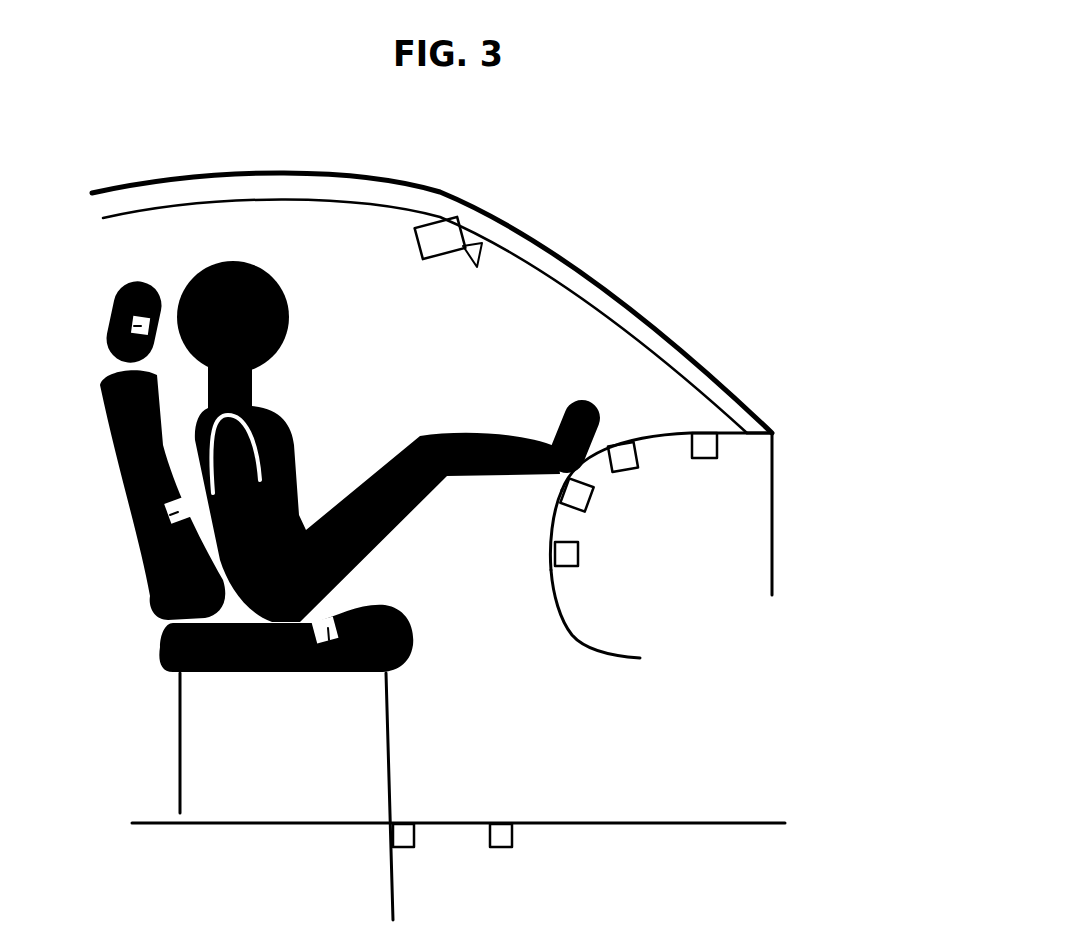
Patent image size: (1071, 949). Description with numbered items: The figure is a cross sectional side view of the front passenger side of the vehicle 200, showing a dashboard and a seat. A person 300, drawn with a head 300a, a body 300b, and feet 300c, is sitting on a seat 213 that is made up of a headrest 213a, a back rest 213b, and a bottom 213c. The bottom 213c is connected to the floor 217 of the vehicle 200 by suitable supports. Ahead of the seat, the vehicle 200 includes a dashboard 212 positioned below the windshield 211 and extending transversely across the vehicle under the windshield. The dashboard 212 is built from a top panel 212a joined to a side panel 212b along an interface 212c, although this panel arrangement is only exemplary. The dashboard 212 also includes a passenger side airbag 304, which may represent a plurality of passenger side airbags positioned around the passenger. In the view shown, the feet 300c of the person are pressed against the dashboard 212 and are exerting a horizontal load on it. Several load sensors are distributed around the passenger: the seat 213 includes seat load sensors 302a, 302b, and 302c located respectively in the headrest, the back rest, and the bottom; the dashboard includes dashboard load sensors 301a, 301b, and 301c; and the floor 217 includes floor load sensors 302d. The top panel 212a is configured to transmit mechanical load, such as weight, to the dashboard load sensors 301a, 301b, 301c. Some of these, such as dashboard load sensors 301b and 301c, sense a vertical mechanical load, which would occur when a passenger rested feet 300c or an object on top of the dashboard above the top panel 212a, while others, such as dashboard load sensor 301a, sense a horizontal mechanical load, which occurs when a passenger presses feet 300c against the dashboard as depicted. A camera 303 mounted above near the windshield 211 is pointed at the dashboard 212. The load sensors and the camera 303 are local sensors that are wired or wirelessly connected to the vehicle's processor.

The vehicle 200 is at (892, 157).
The windshield 211 is at (590, 297).
The dashboard 212 is at (662, 484).
The top panel 212a is at (658, 432).
The side panel 212b is at (552, 588).
The interface 212c is at (552, 517).
The seat 213 is at (226, 583).
The headrest 213a is at (118, 308).
The back rest 213b is at (147, 587).
The bottom 213c is at (290, 673).
The floor 217 is at (660, 823).
The person 300 is at (359, 423).
The head 300a is at (283, 297).
The body 300b is at (287, 450).
The feet 300c is at (585, 398).
The dashboard load sensor 301a is at (573, 500).
The dashboard load sensor 301b is at (623, 460).
The dashboard load sensor 301c is at (703, 452).
The seat load sensor 302a is at (134, 326).
The seat load sensor 302b is at (170, 515).
The seat load sensor 302c is at (329, 640).
The floor load sensors 302d is at (490, 841).
The camera 303 is at (440, 242).
The passenger side airbag 304 is at (565, 580).